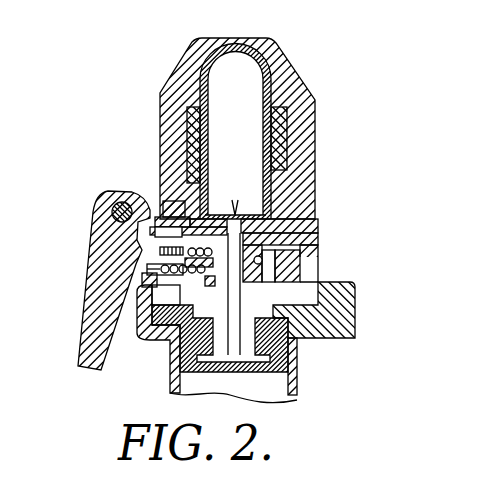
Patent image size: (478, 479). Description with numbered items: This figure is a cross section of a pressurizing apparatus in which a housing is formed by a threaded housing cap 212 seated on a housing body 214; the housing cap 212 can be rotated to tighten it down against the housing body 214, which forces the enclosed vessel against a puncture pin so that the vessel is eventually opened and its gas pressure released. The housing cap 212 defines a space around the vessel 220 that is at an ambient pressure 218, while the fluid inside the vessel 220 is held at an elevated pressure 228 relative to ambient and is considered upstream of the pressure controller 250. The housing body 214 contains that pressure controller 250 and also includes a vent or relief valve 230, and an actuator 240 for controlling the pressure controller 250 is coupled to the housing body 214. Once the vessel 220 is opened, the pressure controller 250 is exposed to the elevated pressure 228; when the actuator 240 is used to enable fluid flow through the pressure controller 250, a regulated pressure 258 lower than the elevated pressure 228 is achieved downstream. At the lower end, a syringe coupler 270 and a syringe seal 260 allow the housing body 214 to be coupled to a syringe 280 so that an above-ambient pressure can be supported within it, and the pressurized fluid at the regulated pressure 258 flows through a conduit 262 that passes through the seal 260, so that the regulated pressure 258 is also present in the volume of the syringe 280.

The housing cap 212 is at (243, 38).
The vessel 220 is at (277, 64).
The ambient pressure 218 is at (187, 215).
The elevated pressure 228 is at (290, 122).
The vent or relief valve 230 is at (186, 208).
The pressure controller 250 is at (297, 220).
The housing body 214 is at (132, 287).
The actuator 240 is at (102, 222).
The regulated pressure 258 is at (293, 253).
The syringe coupler 270 is at (340, 282).
The syringe seal 260 is at (325, 318).
The syringe 280 is at (297, 366).
The conduit 262 is at (250, 362).